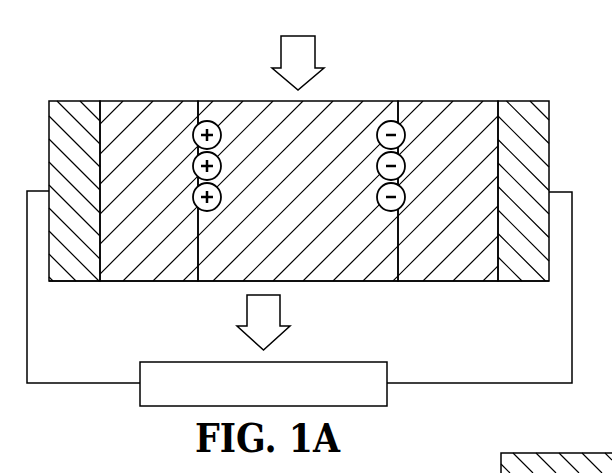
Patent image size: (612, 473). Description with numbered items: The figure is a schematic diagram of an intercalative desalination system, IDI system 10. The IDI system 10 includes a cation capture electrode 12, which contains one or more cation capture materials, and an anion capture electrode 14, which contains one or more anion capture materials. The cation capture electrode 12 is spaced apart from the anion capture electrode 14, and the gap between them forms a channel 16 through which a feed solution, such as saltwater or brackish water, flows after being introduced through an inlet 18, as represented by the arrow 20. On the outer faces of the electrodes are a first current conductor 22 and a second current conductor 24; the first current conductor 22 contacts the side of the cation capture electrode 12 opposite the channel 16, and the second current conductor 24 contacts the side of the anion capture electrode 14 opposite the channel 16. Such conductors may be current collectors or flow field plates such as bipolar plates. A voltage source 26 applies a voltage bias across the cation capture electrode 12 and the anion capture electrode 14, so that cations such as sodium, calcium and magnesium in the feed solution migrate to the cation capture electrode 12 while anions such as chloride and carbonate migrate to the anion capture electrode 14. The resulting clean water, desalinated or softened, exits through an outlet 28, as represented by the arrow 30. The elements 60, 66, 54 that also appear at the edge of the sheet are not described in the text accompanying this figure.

In FIG. 1A, the IDI system 10 is at (108, 38).
In FIG. 1A, the cation capture electrode 12 is at (152, 100).
In FIG. 1A, the anion capture electrode 14 is at (431, 100).
In FIG. 1A, the channel 16 is at (311, 203).
In FIG. 1A, the inlet 18 is at (255, 100).
In FIG. 1A, the arrow 20 is at (316, 52).
In FIG. 1A, the first current conductor 22 is at (77, 100).
In FIG. 1A, the second current conductor 24 is at (523, 100).
In FIG. 1A, the voltage source 26 is at (165, 362).
In FIG. 1A, the outlet 28 is at (309, 283).
In FIG. 1A, the arrow 30 is at (247, 311).
In FIG. 1B, the substrate 60 is at (611, 453).
In FIG. 1B, the layer 66 is at (416, 472).
In FIG. 1B, the layer 54 is at (473, 472).